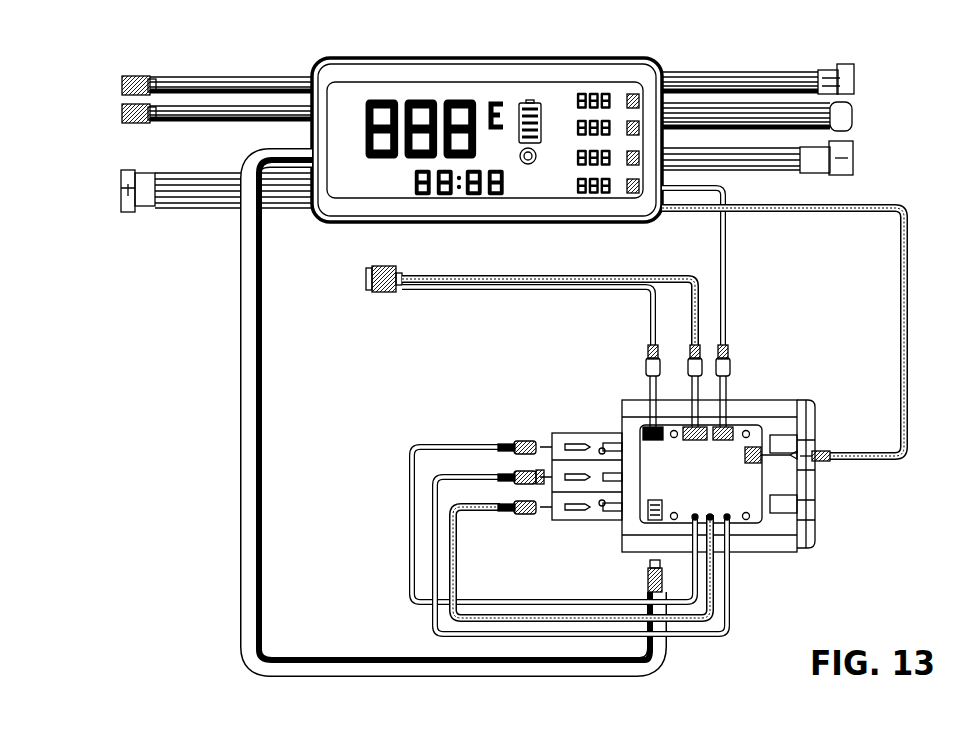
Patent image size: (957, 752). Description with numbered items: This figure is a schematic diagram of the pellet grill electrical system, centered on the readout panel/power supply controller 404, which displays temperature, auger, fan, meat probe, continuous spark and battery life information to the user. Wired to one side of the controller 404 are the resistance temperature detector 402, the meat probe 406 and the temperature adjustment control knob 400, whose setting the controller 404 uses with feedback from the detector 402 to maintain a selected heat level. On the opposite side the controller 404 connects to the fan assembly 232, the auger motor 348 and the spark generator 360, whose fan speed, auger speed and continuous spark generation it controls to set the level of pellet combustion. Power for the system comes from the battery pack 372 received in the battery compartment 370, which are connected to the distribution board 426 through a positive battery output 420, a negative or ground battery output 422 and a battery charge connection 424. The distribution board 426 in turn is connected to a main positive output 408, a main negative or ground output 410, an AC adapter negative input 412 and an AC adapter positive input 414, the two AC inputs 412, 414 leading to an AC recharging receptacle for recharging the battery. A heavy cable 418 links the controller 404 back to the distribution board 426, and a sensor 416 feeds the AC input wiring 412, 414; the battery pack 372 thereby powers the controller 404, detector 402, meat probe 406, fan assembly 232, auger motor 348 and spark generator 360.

The readout panel/power supply controller 404 is at (393, 58).
The resistance temperature detector 402 is at (187, 82).
The meat probe 406 is at (187, 117).
The temperature adjustment control knob 400 is at (185, 191).
The fan assembly 232 is at (781, 79).
The auger motor 348 is at (781, 115).
The spark generator 360 is at (781, 157).
The cable 418 is at (248, 408).
The temperature sensor 416 is at (366, 291).
The AC adapter positive input 414 is at (652, 327).
The AC adapter negative input 412 is at (674, 281).
The main negative output 410 is at (722, 320).
The main positive output 408 is at (884, 459).
The battery compartment 370 is at (818, 545).
The battery pack 372 is at (826, 510).
The distribution board 426 is at (718, 474).
The positive battery output 420 is at (462, 442).
The negative battery output 422 is at (463, 475).
The battery charge connection 424 is at (472, 505).